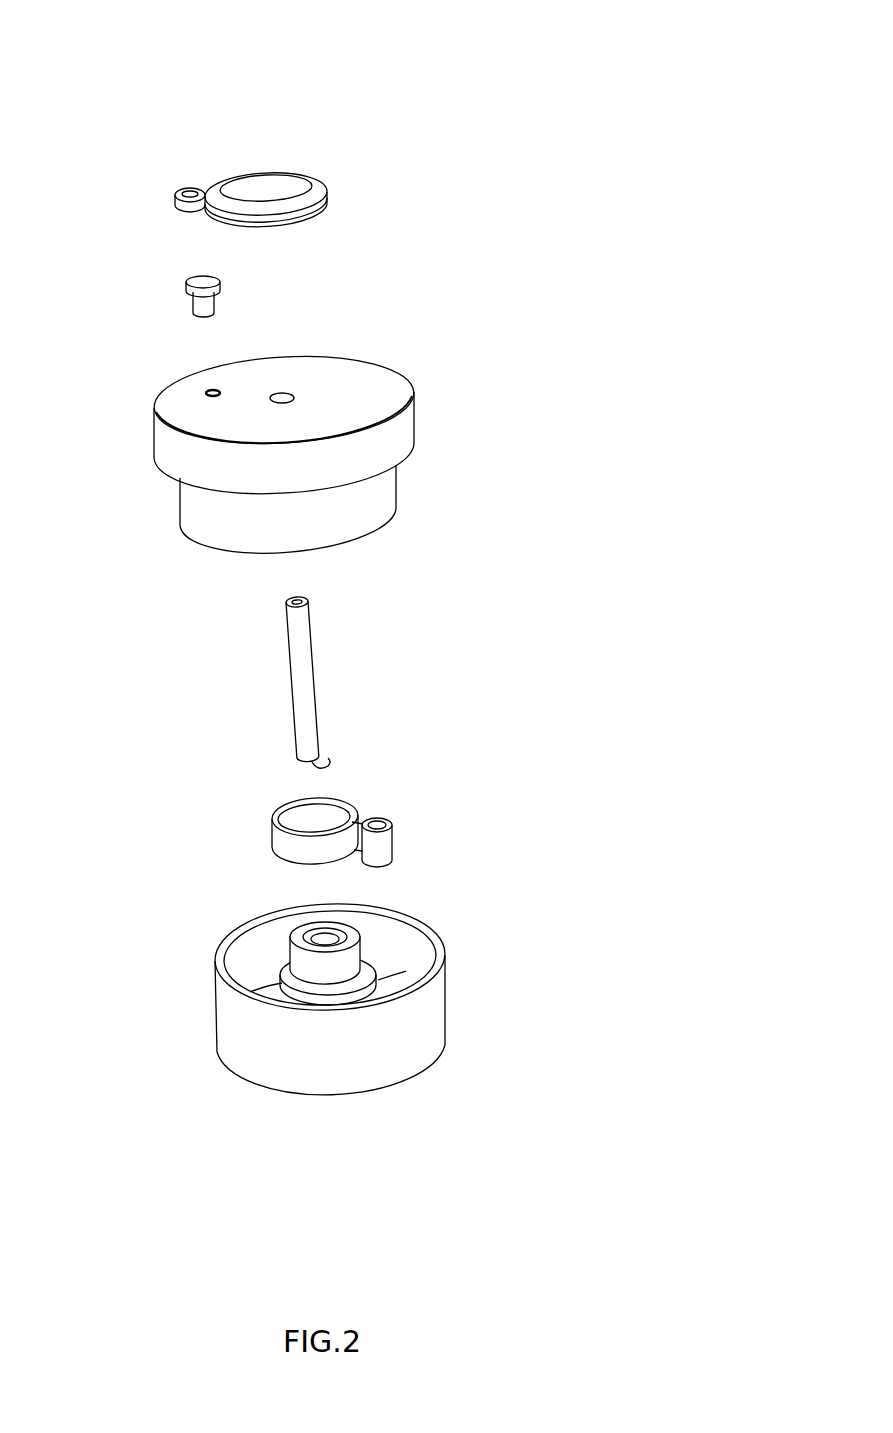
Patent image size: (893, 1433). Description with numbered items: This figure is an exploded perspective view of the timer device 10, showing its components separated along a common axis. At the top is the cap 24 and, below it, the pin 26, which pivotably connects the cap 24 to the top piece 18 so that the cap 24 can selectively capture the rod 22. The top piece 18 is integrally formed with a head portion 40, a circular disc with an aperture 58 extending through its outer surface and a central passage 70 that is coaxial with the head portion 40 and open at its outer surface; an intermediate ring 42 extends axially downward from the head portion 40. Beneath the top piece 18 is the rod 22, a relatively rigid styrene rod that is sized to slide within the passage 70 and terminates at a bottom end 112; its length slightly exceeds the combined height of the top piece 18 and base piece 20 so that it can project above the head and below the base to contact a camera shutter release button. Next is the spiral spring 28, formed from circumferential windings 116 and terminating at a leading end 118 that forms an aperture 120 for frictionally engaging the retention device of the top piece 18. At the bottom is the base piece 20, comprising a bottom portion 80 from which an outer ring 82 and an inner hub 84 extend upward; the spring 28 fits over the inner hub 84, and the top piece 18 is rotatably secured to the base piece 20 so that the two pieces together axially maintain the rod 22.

The timer device 10 is at (548, 36).
The top piece 18 is at (280, 421).
The base piece 20 is at (397, 1002).
The rod 22 is at (354, 666).
The cap 24 is at (316, 167).
The pin 26 is at (234, 292).
The spiral spring 28 is at (403, 819).
The head portion 40 is at (178, 417).
The intermediate ring 42 is at (377, 494).
The aperture 58 is at (212, 389).
The passage 70 is at (284, 392).
The bottom portion 80 is at (385, 976).
The outer ring 82 is at (298, 1058).
The inner hub 84 is at (361, 946).
The bottom end 112 is at (334, 762).
The circumferential windings 116 is at (319, 812).
The leading end 118 is at (381, 822).
The aperture 120 is at (395, 826).